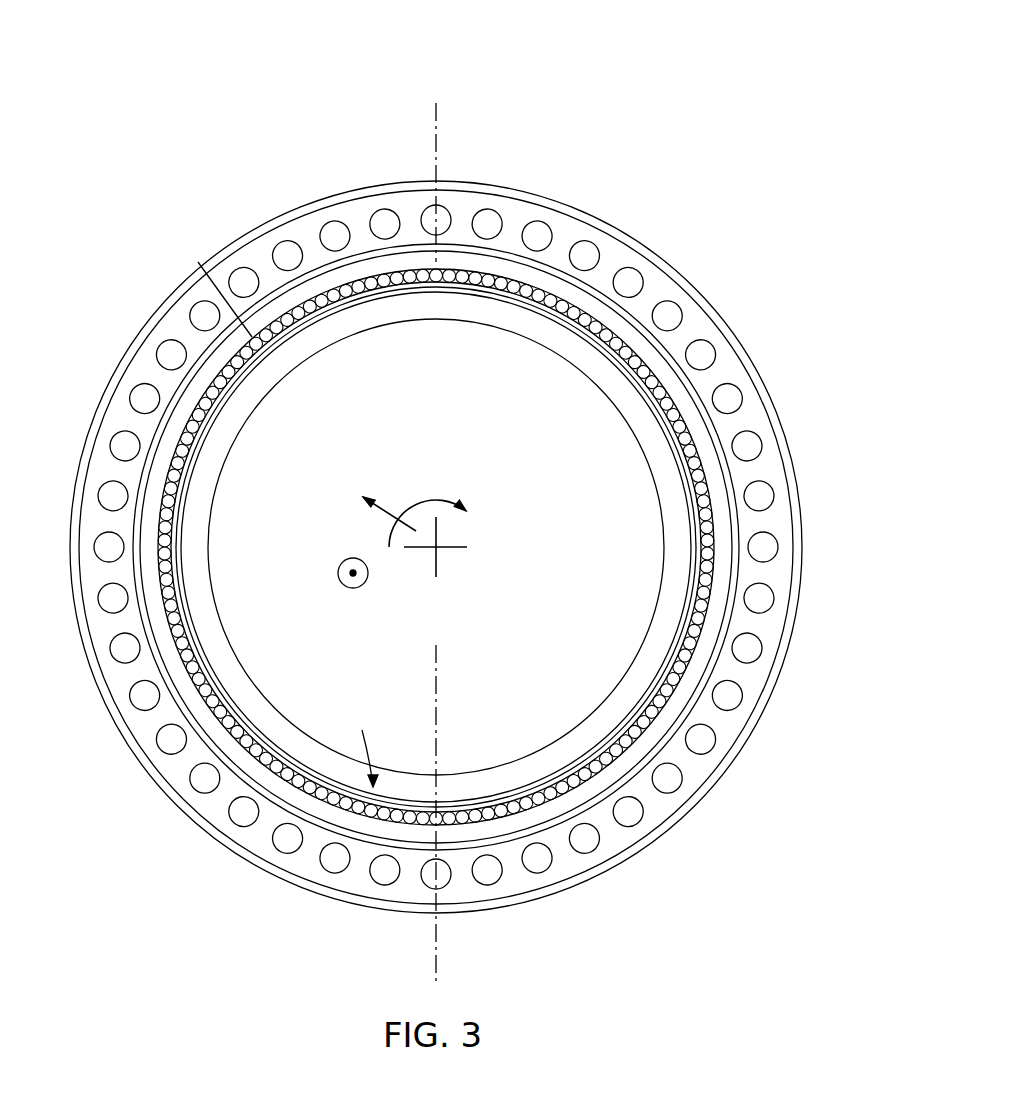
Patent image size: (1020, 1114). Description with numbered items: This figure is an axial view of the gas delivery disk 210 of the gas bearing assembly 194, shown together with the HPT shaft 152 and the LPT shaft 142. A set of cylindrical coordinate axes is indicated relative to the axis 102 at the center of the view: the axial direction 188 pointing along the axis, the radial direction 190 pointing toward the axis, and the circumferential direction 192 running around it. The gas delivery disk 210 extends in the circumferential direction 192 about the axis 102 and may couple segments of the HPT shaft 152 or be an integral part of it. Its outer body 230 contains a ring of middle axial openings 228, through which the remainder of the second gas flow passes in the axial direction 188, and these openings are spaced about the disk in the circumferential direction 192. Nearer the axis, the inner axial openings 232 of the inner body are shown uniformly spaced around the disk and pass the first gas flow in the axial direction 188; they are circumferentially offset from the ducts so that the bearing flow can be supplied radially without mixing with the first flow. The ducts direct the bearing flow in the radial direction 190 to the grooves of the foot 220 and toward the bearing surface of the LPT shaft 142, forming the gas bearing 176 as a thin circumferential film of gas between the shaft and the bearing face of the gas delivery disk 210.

The axis 102 is at (440, 550).
The LPT shaft 142 is at (205, 531).
The HPT shaft 152 is at (727, 525).
The gas bearing 176 is at (364, 747).
The axial direction 188 is at (358, 588).
The radial direction 190 is at (398, 512).
The circumferential direction 192 is at (452, 500).
The gas bearing assembly 194 is at (667, 65).
The gas delivery disk 210 is at (775, 785).
The foot 220 is at (605, 747).
The middle axial openings 228 is at (487, 223).
The outer body 230 is at (655, 295).
The inner axial openings 232 is at (527, 290).